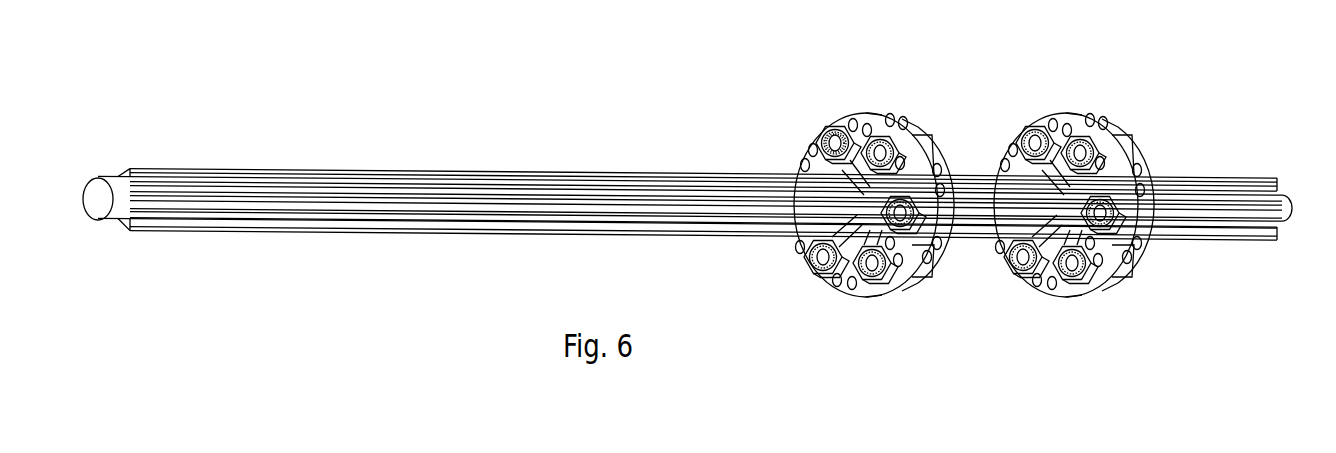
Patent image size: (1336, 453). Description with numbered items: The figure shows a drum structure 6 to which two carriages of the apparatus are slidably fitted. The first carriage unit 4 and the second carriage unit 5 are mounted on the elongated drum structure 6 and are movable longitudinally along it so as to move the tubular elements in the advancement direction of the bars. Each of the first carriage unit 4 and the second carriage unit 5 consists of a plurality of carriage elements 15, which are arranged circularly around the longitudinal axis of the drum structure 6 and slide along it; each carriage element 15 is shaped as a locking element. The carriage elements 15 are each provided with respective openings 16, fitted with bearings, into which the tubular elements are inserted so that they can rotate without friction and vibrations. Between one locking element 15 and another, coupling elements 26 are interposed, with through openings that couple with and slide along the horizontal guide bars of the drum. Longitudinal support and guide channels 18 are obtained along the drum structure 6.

The first carriage unit 4 is at (1080, 253).
The second carriage unit 5 is at (882, 183).
The drum structure 6 is at (333, 195).
The carriage element 15 is at (925, 140).
The opening 16 is at (832, 138).
The longitudinal support and guide channel 18 is at (745, 210).
The coupling element 26 is at (1072, 130).